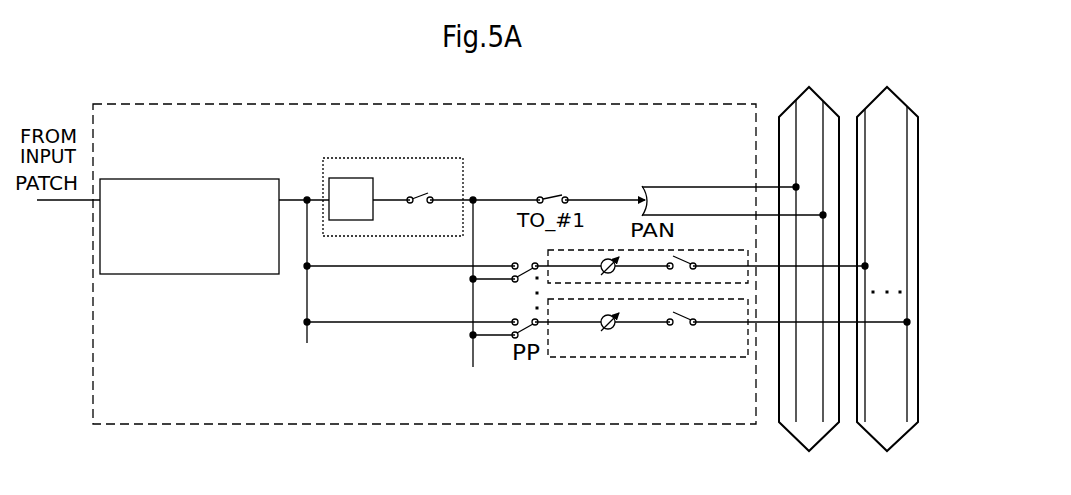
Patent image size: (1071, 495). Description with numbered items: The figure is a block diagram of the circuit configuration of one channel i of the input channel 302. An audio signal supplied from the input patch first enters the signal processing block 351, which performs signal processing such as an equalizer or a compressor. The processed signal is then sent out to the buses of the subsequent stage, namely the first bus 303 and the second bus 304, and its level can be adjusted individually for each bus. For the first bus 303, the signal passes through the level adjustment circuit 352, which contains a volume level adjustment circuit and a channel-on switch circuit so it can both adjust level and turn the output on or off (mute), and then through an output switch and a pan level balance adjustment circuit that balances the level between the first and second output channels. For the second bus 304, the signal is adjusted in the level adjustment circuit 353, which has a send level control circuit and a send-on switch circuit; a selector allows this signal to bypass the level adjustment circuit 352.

The input channel 302 is at (638, 104).
The signal processing block 351 is at (250, 178).
The level adjustment circuit 352 is at (440, 158).
The level adjustment circuit 353 is at (575, 358).
The first bus (#1 bus) 303 is at (820, 107).
The second bus (#2 bus) 304 is at (892, 97).